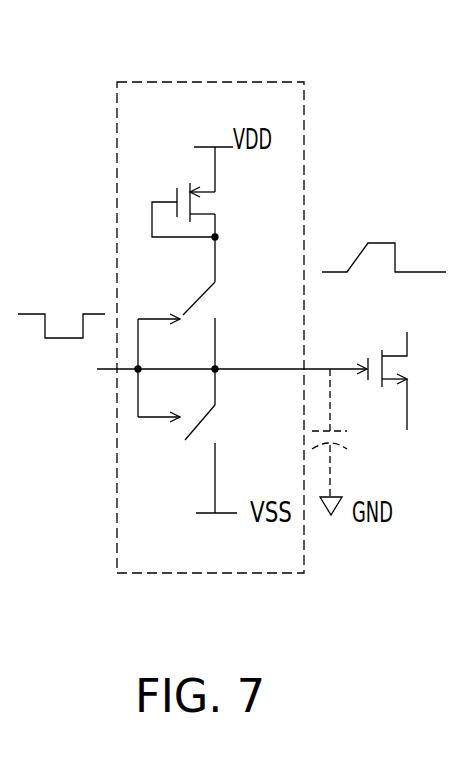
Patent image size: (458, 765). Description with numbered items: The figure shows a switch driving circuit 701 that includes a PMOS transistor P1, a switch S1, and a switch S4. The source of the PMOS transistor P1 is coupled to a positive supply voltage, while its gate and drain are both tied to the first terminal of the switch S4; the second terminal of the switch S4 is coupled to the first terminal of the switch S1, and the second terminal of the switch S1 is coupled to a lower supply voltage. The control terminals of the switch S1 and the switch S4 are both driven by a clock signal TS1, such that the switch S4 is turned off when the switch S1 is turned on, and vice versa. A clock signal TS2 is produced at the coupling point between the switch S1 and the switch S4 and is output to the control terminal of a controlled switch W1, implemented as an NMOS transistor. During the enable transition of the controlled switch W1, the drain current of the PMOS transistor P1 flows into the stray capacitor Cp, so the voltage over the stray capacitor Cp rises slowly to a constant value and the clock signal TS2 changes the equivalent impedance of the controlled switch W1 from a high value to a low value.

The switch driving circuit 701 is at (304, 103).
The PMOS transistor P1 is at (205, 211).
The switch S4 is at (215, 303).
The switch S1 is at (215, 441).
The clock signal TS1 is at (116, 368).
The clock signal TS2 is at (315, 369).
The controlled switch W1 is at (406, 381).
The stray capacitor Cp is at (347, 442).